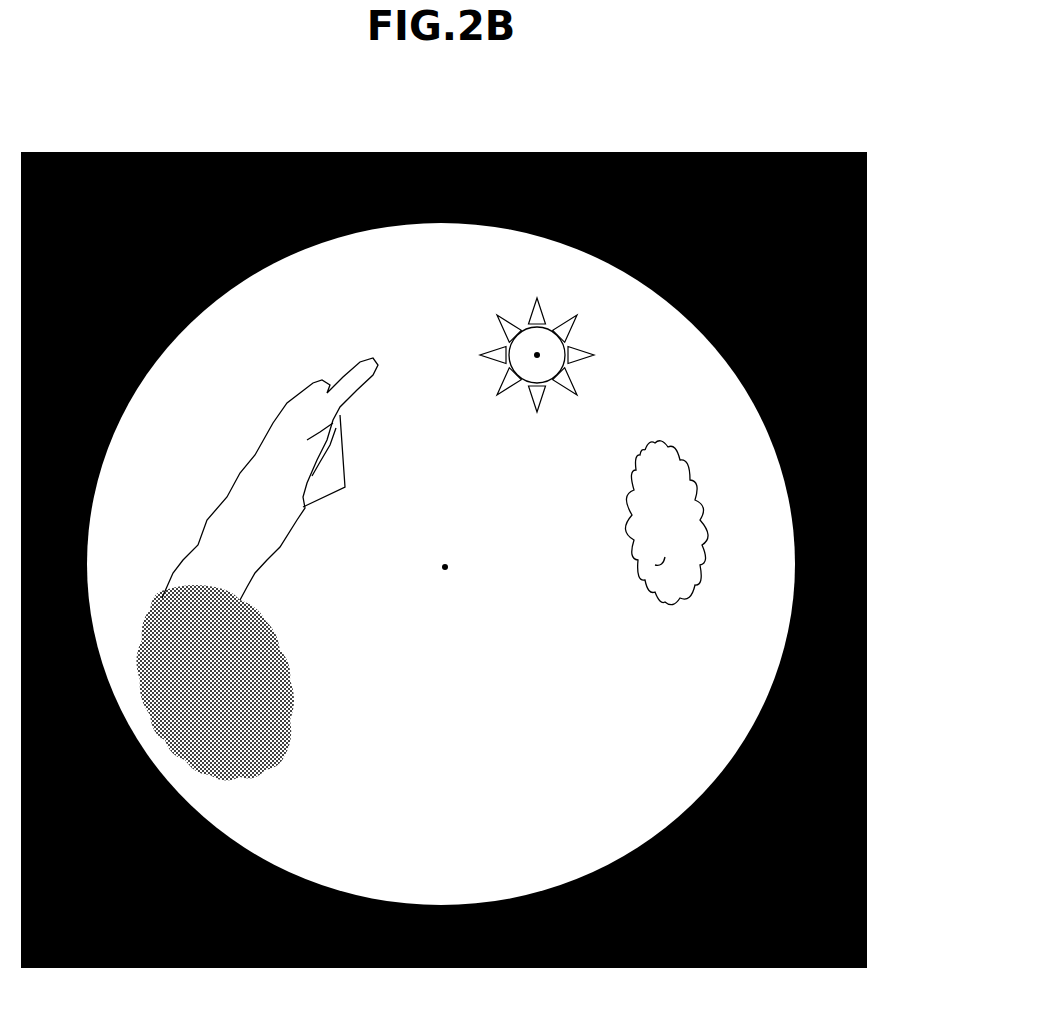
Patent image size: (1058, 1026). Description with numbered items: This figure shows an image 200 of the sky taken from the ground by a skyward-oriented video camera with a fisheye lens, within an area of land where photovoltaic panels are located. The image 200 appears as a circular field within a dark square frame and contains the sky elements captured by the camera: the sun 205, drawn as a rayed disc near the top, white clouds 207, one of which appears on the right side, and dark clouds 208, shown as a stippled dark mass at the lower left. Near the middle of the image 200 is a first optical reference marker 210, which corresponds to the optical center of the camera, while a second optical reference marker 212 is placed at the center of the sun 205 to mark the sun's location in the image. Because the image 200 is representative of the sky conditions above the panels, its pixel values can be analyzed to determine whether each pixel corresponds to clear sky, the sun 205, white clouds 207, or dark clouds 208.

The image 200 is at (867, 722).
The sun 205 is at (550, 380).
The white clouds 207 is at (727, 597).
The dark clouds 208 is at (280, 760).
The first optical reference marker 210 is at (445, 567).
The second optical reference marker 212 is at (537, 355).